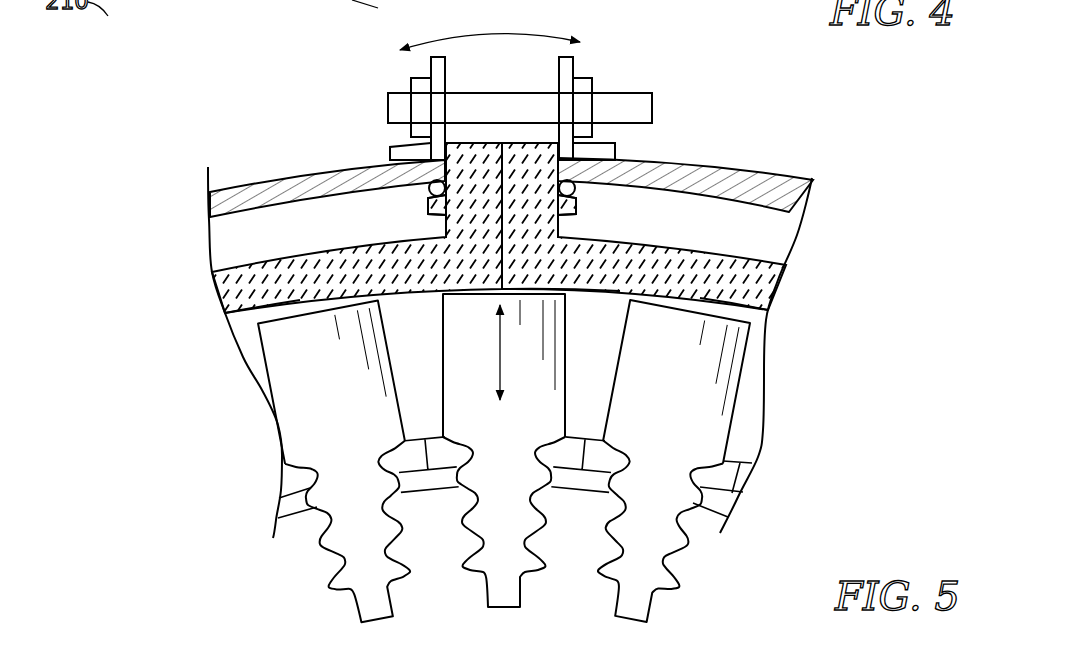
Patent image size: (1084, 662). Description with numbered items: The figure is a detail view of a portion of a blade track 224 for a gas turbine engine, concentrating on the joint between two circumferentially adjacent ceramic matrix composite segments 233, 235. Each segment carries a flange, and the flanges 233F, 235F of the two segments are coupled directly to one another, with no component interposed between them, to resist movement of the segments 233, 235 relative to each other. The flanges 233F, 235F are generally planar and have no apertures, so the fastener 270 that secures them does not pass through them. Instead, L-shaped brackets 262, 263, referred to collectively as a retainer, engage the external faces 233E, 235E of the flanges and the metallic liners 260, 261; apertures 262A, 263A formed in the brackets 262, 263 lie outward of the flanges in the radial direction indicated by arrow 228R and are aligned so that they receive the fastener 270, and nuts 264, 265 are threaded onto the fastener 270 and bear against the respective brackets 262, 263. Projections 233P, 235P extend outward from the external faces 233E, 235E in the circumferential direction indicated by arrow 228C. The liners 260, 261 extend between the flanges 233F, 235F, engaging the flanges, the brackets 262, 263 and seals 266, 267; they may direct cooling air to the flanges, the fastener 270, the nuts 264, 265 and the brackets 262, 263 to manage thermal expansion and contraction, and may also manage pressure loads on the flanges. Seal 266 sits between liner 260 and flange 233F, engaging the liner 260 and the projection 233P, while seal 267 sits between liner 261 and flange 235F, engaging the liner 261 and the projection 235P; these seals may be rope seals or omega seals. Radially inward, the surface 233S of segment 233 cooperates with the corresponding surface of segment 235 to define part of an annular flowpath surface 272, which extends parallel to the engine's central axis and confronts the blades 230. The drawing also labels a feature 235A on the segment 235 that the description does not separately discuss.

The blade track 224 is at (176, 104).
The arrow indicating circumferential direction 228C is at (478, 32).
The arrow indicating radial direction 228R is at (500, 352).
The blades 230 is at (528, 377).
The ceramic matrix composite segment 233 is at (740, 288).
The external face 233E is at (617, 160).
The flange 233F is at (515, 140).
The projection 233P is at (585, 208).
The radially inward surface 233S is at (762, 311).
The ceramic matrix composite segment 235 is at (250, 294).
The first rim surface 235A is at (291, 302).
The external face 235E is at (443, 168).
The flange 235F is at (463, 140).
The projection 235P is at (385, 216).
The metallic liner 260 is at (230, 192).
The metallic liner 261 is at (788, 198).
The L-shaped bracket 262 is at (400, 143).
The aperture 262A is at (425, 111).
The L-shaped bracket 263 is at (612, 140).
The aperture 263A is at (580, 107).
The nut 264 is at (407, 88).
The nut 265 is at (582, 73).
The seal 266 is at (425, 188).
The seal 267 is at (583, 193).
The fastener 270 is at (618, 108).
The annular flowpath surface 272 is at (597, 287).